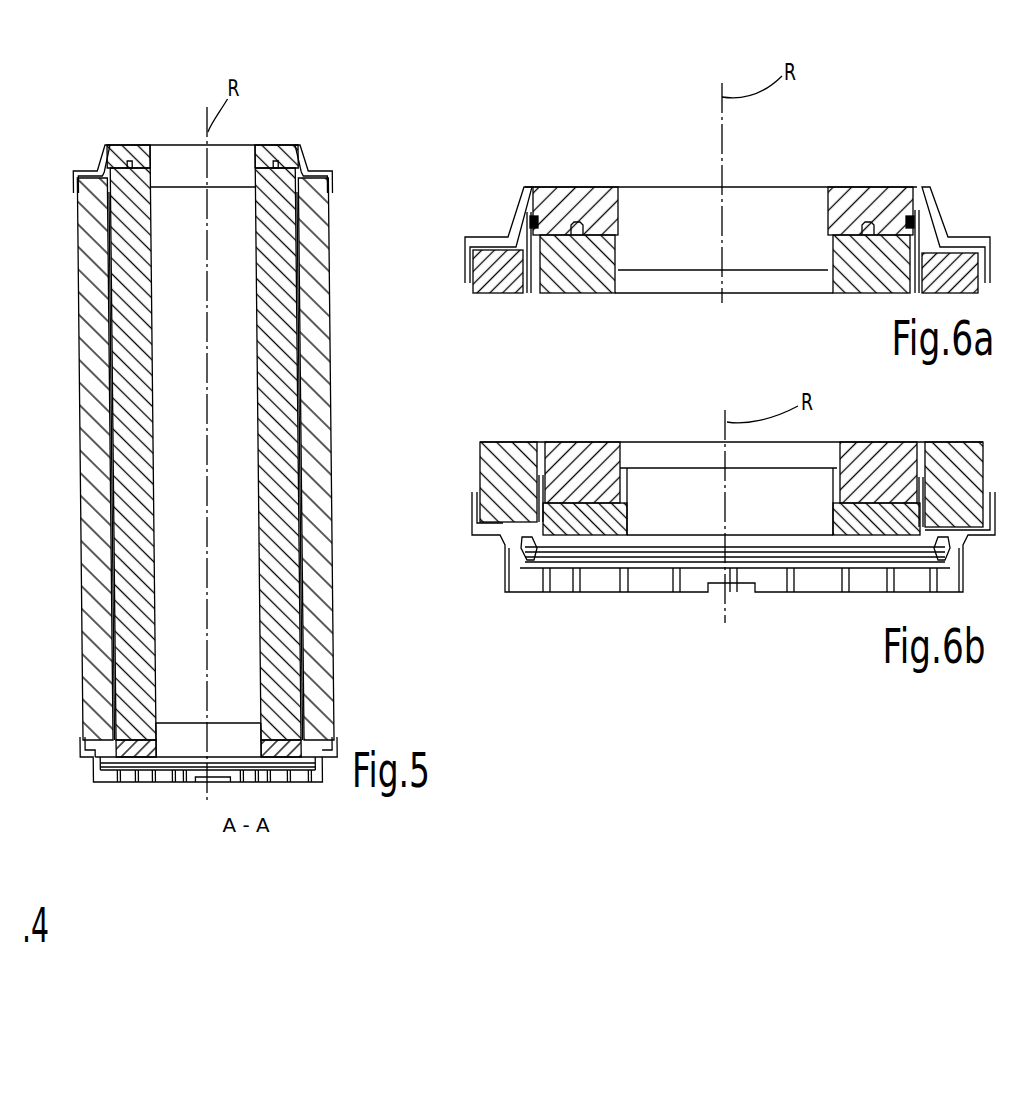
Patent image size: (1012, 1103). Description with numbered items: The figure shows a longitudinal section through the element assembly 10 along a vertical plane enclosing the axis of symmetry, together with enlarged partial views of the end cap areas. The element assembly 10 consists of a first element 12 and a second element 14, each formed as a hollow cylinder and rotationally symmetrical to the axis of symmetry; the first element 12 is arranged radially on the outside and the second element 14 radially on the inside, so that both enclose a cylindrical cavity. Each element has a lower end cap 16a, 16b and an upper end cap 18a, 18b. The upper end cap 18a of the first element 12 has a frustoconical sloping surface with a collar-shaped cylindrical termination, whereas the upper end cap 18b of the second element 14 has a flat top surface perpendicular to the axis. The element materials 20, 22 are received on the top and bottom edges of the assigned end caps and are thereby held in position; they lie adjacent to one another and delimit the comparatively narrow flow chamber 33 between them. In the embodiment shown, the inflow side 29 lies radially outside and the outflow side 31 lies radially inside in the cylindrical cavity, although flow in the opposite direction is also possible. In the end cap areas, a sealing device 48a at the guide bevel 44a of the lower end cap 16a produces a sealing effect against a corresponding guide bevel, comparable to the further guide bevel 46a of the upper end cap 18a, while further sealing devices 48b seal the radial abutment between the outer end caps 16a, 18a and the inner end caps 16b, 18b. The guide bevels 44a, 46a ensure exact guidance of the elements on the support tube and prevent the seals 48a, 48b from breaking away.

In FIG. 5, the element assembly 10 is at (248, 90).
In FIG. 5, the first element 12 is at (323, 158).
In FIG. 5, the second element 14 is at (271, 138).
In FIG. 5, the lower end cap 16a is at (96, 766).
In FIG. 6b, the lower end cap 16a is at (495, 537).
In FIG. 5, the lower end cap 16b is at (141, 754).
In FIG. 6b, the lower end cap 16b is at (598, 515).
In FIG. 5, the upper end cap 18a is at (101, 152).
In FIG. 6a, the upper end cap 18a is at (508, 211).
In FIG. 5, the upper end cap 18b is at (132, 154).
In FIG. 6a, the upper end cap 18b is at (560, 200).
In FIG. 5, the element material 20 is at (90, 288).
In FIG. 6a, the element material 20 is at (500, 280).
In FIG. 6b, the element material 20 is at (495, 455).
In FIG. 5, the element material 22 is at (128, 280).
In FIG. 6a, the element material 22 is at (562, 275).
In FIG. 6b, the element material 22 is at (585, 472).
In FIG. 5, the inflow side 29 is at (170, 466).
In FIG. 5, the outflow side 31 is at (205, 434).
In FIG. 5, the flow chamber 33 is at (113, 515).
In FIG. 6b, the guide bevel 44a is at (544, 553).
In FIG. 6a, the further guide bevel 46a is at (504, 229).
In FIG. 6b, the sealing device 48a is at (521, 560).
In FIG. 6a, the further sealing device 48b is at (519, 212).
In FIG. 6b, the further sealing device 48b is at (548, 518).